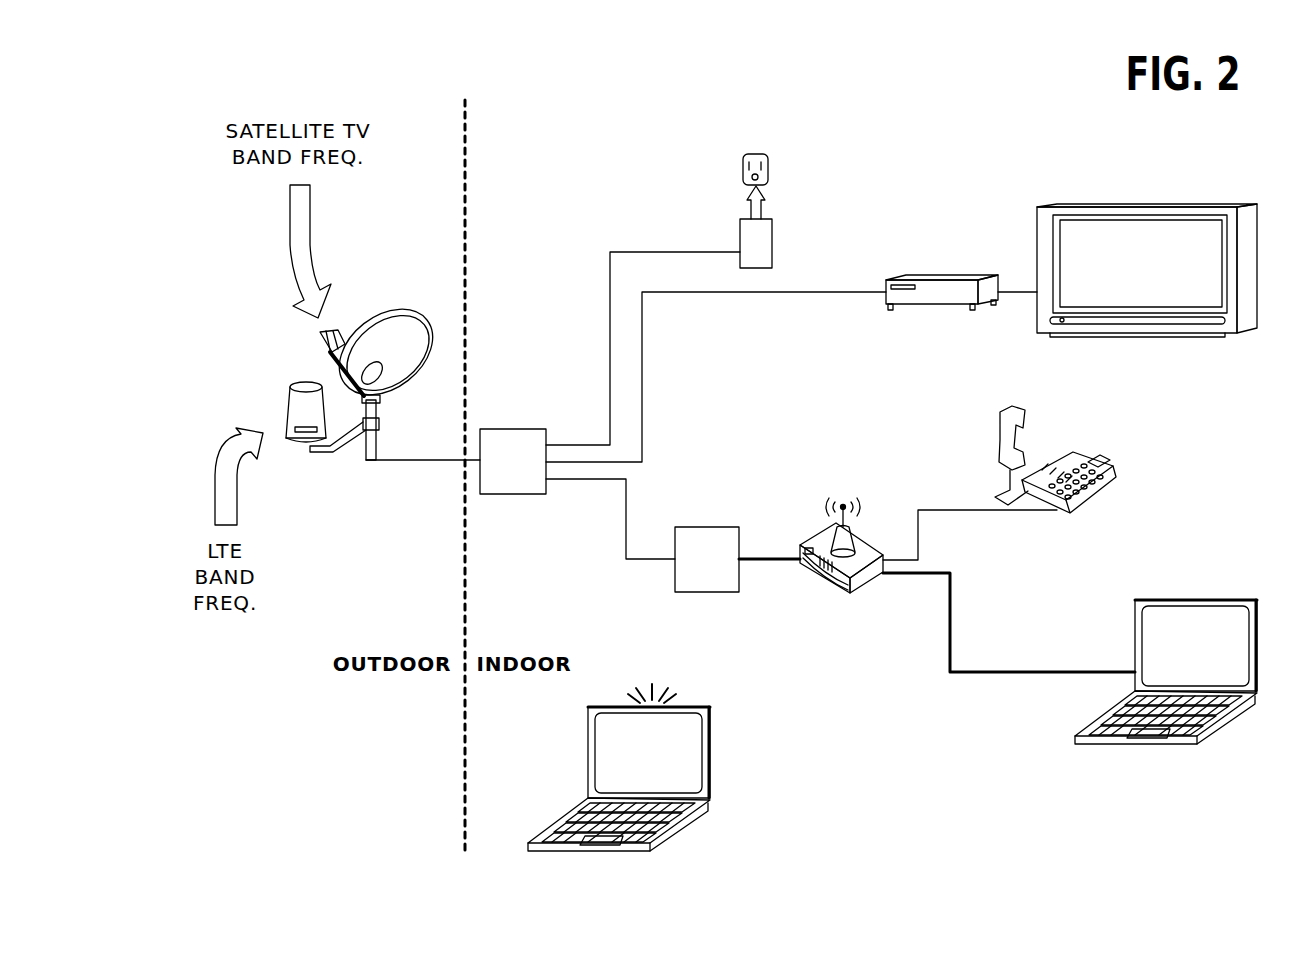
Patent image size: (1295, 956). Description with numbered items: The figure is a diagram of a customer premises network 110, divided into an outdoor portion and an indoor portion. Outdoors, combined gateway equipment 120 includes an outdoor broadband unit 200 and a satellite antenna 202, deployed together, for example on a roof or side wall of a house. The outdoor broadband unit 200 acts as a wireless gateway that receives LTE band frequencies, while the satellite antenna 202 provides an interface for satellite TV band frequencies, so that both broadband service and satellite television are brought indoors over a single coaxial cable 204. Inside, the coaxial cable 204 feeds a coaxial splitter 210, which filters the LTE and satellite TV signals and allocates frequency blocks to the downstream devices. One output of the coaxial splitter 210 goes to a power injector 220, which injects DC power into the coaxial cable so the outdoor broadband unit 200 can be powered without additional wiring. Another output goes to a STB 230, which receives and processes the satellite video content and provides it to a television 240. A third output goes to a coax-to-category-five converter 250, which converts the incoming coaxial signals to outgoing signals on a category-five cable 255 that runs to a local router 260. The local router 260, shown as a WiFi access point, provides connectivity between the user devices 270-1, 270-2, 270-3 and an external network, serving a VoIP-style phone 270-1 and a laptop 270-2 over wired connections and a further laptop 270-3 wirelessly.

The customer premises network 110 is at (205, 42).
The combined gateway equipment 120 is at (236, 318).
The outdoor broadband unit 200 is at (286, 406).
The satellite antenna 202 is at (405, 330).
The coaxial cable 204 is at (406, 462).
The coaxial splitter 210 is at (530, 429).
The power injector 220 is at (740, 235).
The STB 230 is at (912, 274).
The television 240 is at (1190, 207).
The coax/Cat 5 converter 250 is at (724, 527).
The Cat 5 cable 255 is at (772, 566).
The local router 260 is at (860, 592).
The user device 270-1 is at (1117, 473).
The user device 270-2 is at (1135, 645).
The user device 270-3 is at (688, 816).